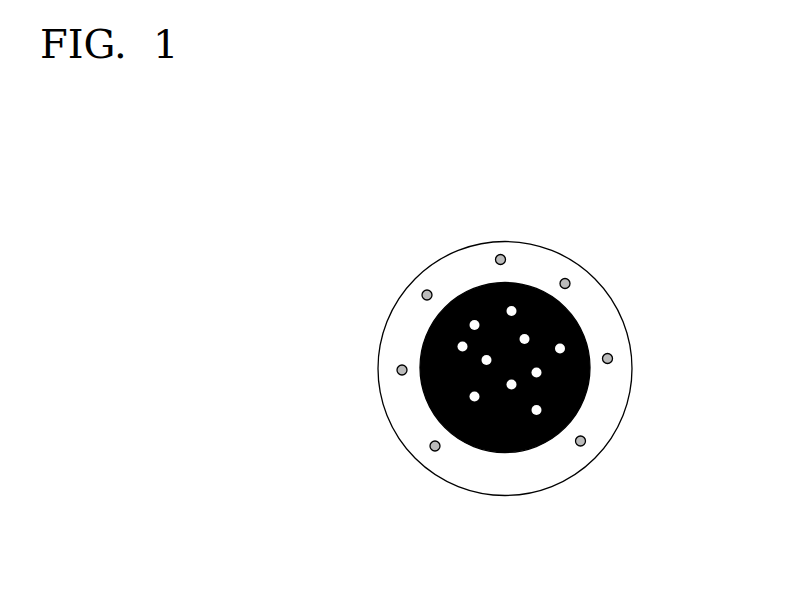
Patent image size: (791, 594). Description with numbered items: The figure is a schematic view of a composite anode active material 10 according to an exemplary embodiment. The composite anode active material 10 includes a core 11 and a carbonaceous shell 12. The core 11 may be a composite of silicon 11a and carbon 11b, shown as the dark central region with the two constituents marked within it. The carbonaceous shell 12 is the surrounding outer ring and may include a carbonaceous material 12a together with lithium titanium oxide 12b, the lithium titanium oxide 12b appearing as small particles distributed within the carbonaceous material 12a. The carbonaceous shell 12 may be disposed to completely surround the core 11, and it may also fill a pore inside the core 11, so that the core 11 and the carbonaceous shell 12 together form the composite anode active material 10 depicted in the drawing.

The composite anode active material 10 is at (601, 231).
The core 11 is at (705, 320).
The silicon 11a is at (567, 347).
The carbon 11b is at (543, 374).
The carbonaceous shell 12 is at (547, 537).
The carbonaceous material 12a is at (515, 472).
The lithium titanium oxide 12b is at (435, 451).